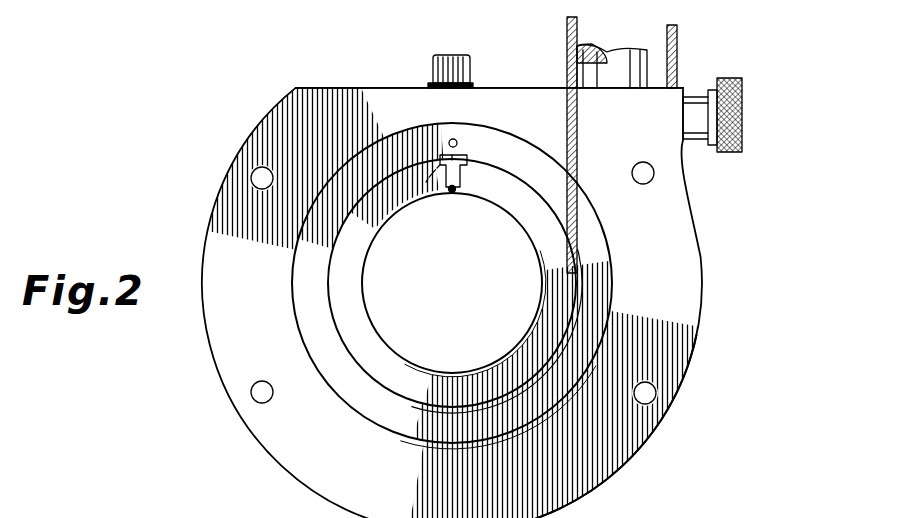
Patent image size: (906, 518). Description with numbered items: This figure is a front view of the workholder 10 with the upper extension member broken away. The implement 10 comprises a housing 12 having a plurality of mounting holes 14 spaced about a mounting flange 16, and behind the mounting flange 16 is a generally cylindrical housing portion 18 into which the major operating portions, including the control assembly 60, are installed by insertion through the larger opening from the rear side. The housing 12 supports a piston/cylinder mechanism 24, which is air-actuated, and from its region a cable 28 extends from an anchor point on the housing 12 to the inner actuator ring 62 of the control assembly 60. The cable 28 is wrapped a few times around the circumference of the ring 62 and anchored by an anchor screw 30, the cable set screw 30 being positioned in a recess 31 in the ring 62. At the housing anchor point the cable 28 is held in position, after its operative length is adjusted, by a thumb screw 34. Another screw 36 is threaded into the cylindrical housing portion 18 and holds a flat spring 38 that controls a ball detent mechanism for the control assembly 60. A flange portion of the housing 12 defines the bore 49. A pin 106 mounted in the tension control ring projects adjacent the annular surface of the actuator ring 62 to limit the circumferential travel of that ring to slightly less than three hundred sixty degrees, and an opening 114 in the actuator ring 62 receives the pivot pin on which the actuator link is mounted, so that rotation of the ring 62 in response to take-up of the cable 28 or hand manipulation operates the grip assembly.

The workholder 10 is at (426, 33).
The housing 12 is at (286, 90).
The mounting holes 14 is at (266, 182).
The mounting flange 16 is at (616, 470).
The cylindrical housing portion 18 is at (198, 207).
The piston/cylinder mechanism 24 is at (641, 42).
The cable 28 is at (678, 46).
The anchor screw 30 is at (465, 150).
The recess 31 is at (426, 178).
The thumb screw 34 is at (730, 78).
The screw 36 is at (466, 52).
The flat spring 38 is at (473, 84).
The bore 49 is at (512, 446).
The control assembly 60 is at (346, 418).
The actuator ring 62 is at (393, 401).
The pin 106 is at (452, 139).
The opening 114 is at (453, 192).